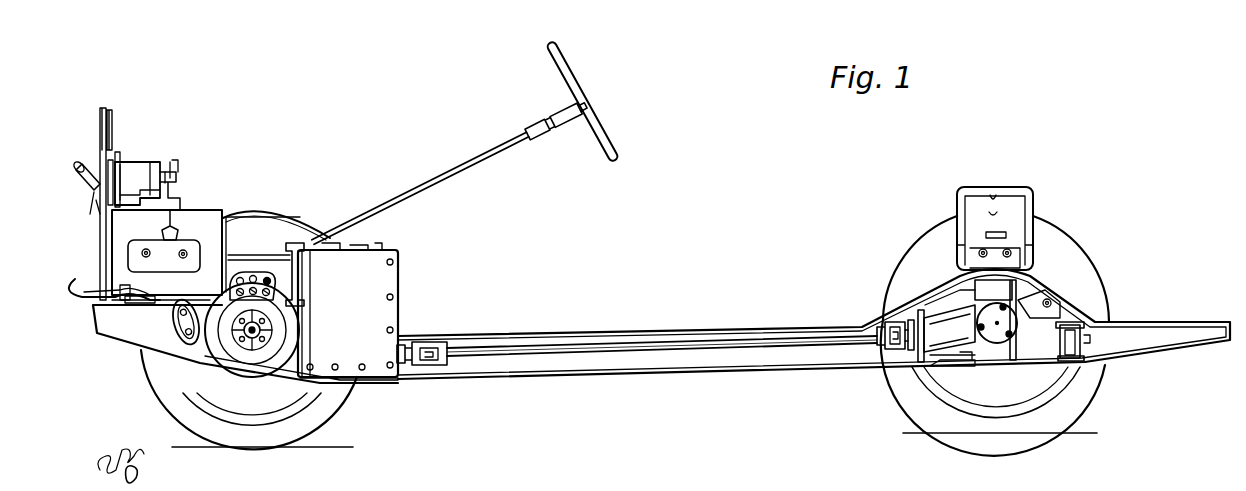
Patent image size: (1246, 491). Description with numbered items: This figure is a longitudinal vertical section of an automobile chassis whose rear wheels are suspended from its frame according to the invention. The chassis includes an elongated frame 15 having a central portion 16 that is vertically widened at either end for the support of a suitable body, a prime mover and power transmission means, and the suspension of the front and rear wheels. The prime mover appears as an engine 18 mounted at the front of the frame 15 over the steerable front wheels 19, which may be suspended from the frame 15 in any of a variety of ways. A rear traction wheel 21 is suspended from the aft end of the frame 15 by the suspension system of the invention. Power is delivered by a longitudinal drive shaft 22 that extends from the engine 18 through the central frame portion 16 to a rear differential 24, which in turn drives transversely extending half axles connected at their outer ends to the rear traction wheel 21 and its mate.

The elongated frame 15 is at (576, 334).
The central portion 16 is at (646, 334).
The engine 18 is at (192, 211).
The steerable front wheels 19 is at (337, 408).
The rear traction wheel 21 is at (1088, 390).
The longitudinal drive shaft 22 is at (776, 340).
The rear differential 24 is at (968, 356).